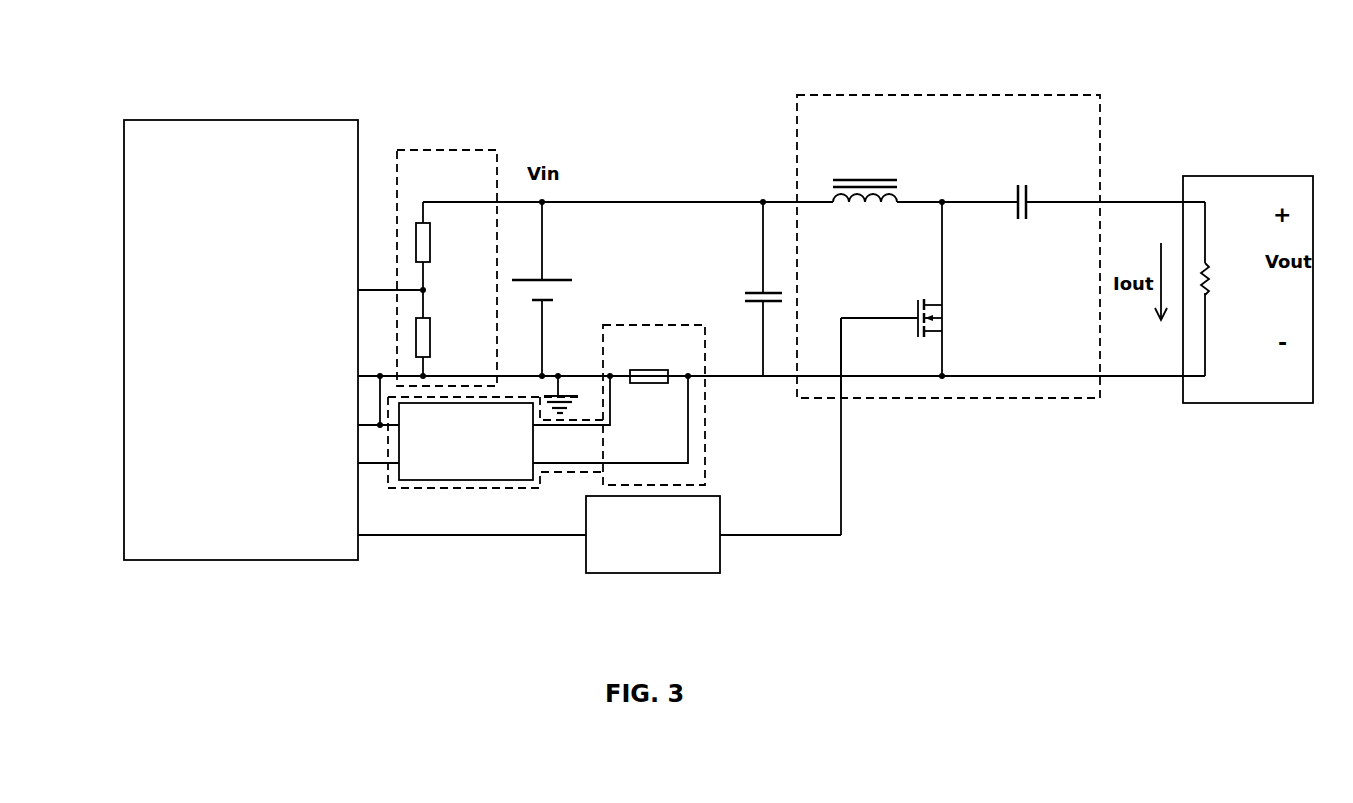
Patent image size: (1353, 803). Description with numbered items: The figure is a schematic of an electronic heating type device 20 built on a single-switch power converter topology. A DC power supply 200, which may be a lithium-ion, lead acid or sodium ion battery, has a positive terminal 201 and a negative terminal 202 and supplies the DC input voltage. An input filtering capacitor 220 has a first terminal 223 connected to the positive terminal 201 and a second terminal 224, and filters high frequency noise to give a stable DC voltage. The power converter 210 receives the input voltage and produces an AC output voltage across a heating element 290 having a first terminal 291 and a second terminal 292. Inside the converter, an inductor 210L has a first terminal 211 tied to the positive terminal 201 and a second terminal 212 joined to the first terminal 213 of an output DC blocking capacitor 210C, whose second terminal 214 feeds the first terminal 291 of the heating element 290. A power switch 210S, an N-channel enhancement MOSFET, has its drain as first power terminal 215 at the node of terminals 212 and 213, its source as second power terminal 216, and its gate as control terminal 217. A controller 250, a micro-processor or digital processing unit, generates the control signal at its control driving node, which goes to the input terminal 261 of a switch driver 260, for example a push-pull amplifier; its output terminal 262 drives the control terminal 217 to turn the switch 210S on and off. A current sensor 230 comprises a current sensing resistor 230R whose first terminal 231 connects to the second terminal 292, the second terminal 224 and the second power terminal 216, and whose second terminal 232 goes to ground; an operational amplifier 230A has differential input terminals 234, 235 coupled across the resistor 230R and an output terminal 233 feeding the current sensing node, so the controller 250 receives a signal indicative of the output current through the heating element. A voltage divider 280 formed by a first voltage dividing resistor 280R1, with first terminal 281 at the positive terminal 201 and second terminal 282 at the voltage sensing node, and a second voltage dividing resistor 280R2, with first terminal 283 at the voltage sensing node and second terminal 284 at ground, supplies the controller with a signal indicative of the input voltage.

The electronic heating type device 20 is at (172, 64).
The controller 250 is at (231, 306).
The voltage divider 280 is at (452, 182).
The first terminal of first voltage dividing resistor 281 is at (427, 215).
The second terminal of first voltage dividing resistor 282 is at (427, 275).
The first terminal of second voltage dividing resistor 283 is at (427, 305).
The second terminal of second voltage dividing resistor 284 is at (427, 366).
The first voltage dividing resistor 280R1 is at (453, 242).
The second voltage dividing resistor 280R2 is at (453, 337).
The power supply 200 is at (565, 289).
The positive terminal 201 is at (546, 249).
The negative terminal 202 is at (546, 333).
The input filtering capacitor 220 is at (741, 289).
The first terminal of input filtering capacitor 223 is at (759, 261).
The second terminal of input filtering capacitor 224 is at (759, 321).
The power converter 210 is at (858, 129).
The first terminal of inductor 211 is at (813, 199).
The second terminal of inductor 212 is at (917, 199).
The first terminal of output DC blocking capacitor 213 is at (983, 199).
The second terminal of output DC blocking capacitor 214 is at (1059, 199).
The first power terminal 215 is at (946, 270).
The second power terminal 216 is at (946, 344).
The control terminal 217 is at (845, 350).
The inductor 210L is at (865, 211).
The output DC blocking capacitor 210C is at (1027, 214).
The power switch 210S is at (904, 311).
The heating element 290 is at (1232, 289).
The first terminal of heating element 291 is at (1209, 230).
The second terminal of heating element 292 is at (1209, 331).
The current sensor 230 is at (552, 464).
The operational amplifier 230A is at (466, 441).
The current sensing resistor 230R is at (654, 405).
The first terminal of current sensing resistor 231 is at (678, 369).
The second terminal of current sensing resistor 232 is at (621, 369).
The output terminal of operational amplifier 233 is at (380, 466).
The differential input terminal 234 is at (613, 420).
The differential input terminal 235 is at (692, 429).
The switch driver 260 is at (653, 534).
The input terminal of switch driver 261 is at (557, 532).
The output terminal of switch driver 262 is at (753, 532).